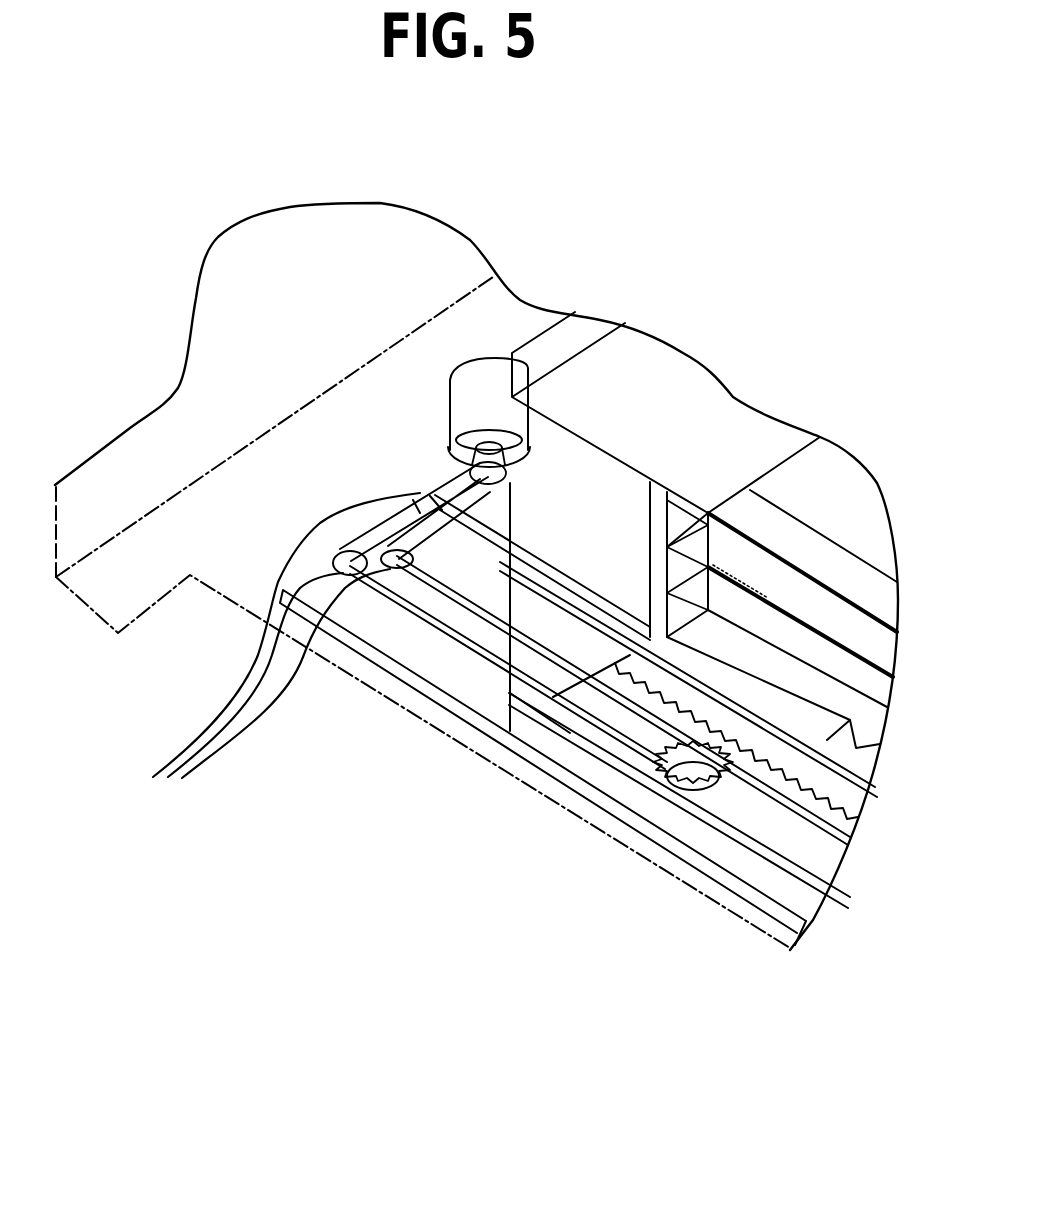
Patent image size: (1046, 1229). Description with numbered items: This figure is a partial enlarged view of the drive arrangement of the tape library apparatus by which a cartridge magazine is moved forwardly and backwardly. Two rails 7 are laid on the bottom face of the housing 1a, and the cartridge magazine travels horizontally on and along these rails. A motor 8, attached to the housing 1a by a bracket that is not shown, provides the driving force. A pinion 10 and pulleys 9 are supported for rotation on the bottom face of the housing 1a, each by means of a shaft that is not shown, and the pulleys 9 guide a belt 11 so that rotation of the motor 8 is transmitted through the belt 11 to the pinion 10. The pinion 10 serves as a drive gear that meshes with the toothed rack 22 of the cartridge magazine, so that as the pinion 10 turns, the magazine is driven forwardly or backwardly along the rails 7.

The housing 1a is at (227, 597).
The rails 7 is at (457, 717).
The motor 8 is at (487, 373).
The pulleys 9 is at (321, 642).
The pinion 10 is at (707, 792).
The belt 11 is at (525, 697).
The toothed rack 22 is at (813, 757).